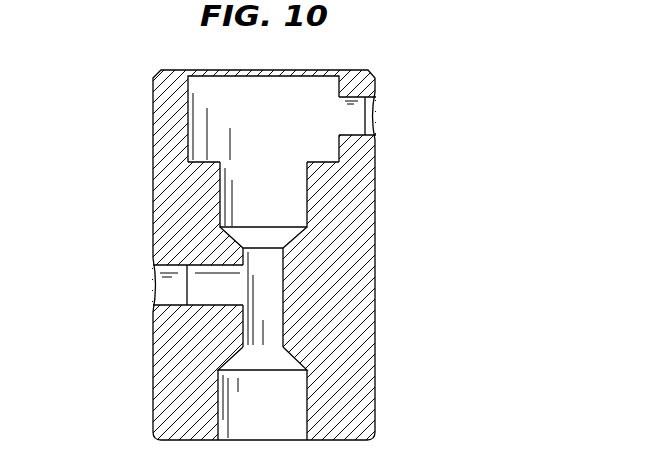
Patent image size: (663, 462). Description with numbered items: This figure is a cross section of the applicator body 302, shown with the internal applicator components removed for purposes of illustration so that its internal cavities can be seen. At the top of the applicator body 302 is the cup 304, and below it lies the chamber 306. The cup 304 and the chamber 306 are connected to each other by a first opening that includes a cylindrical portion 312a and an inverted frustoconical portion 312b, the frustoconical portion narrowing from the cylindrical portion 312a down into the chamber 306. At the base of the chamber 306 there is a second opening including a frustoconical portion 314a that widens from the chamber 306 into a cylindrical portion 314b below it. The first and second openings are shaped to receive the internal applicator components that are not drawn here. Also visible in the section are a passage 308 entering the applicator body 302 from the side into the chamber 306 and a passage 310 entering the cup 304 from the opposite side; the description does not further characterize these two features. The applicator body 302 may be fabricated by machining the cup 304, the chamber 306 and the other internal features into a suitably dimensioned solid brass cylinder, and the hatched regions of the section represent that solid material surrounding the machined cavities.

The applicator body 302 is at (376, 233).
The cup 304 is at (275, 129).
The chamber 306 is at (263, 298).
The side port 308 is at (130, 287).
The outlet port 310 is at (392, 116).
The cylindrical portion 312a is at (285, 209).
The inverted frustoconical portion 312b is at (262, 239).
The frustoconical portion 314a is at (260, 358).
The cylindrical portion 314b is at (285, 419).